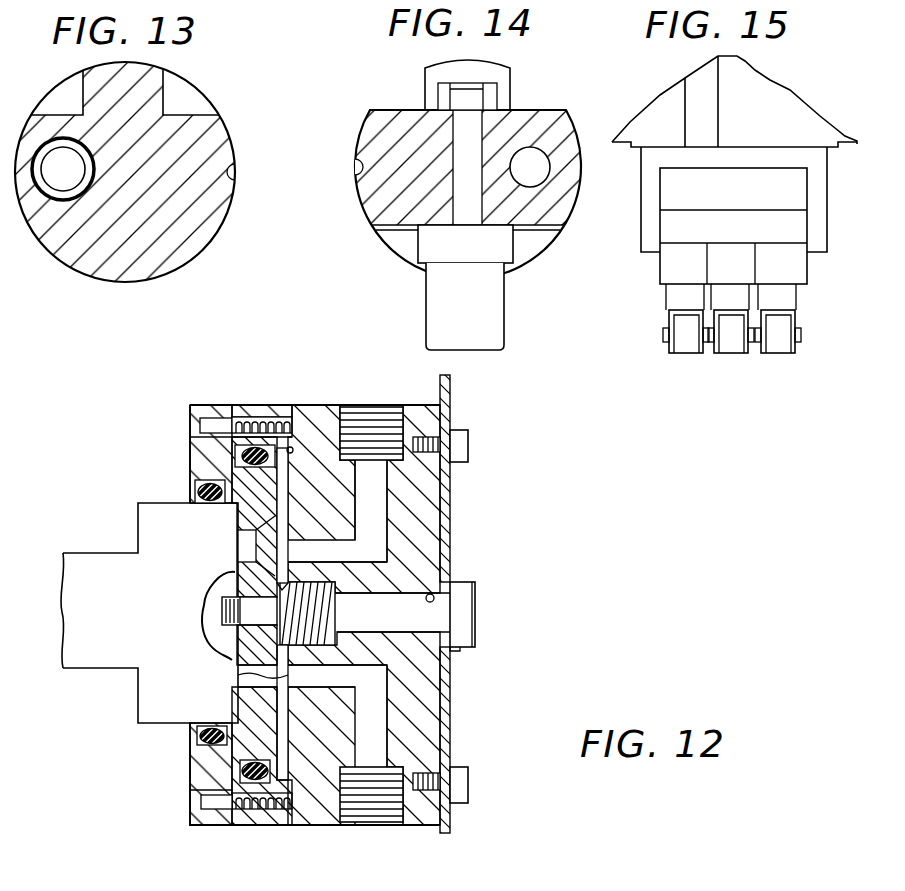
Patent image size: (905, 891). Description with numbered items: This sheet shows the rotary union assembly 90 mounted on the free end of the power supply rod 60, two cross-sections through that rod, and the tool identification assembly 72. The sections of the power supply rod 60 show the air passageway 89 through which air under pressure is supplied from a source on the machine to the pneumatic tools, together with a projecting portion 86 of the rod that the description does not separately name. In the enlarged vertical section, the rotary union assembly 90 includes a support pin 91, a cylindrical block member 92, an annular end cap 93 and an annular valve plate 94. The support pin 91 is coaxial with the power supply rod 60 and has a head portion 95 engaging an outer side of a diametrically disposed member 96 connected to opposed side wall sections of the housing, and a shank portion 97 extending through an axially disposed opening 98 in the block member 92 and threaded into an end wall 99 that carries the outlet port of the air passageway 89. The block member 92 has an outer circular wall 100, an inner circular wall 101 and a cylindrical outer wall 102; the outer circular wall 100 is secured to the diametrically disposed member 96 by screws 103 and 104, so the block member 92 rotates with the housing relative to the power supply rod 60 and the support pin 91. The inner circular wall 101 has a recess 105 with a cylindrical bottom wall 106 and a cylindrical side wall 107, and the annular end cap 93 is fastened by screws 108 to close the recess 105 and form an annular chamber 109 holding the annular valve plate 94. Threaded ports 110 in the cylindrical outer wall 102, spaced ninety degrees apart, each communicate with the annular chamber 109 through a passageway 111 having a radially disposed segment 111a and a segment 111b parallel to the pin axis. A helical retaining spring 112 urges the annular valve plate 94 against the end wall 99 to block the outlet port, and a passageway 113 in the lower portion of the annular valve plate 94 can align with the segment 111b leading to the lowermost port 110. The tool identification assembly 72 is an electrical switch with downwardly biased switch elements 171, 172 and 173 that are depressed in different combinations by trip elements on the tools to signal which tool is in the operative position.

In FIG. 13, the power supply rod 60 is at (225, 116).
In FIG. 14, the power supply rod 60 is at (515, 86).
In FIG. 15, the power supply rod 60 is at (800, 84).
In FIG. 12, the power supply rod 60 is at (125, 652).
In FIG. 13, the air passageway 89 is at (55, 182).
In FIG. 14, the air passageway 89 is at (548, 168).
In FIG. 14, the stem 86 is at (428, 312).
In FIG. 15, the tool identification assembly 72 is at (645, 278).
In FIG. 15, the switch element 171 is at (689, 352).
In FIG. 15, the switch element 172 is at (734, 354).
In FIG. 15, the switch element 173 is at (778, 353).
In FIG. 12, the rotary union assembly 90 is at (186, 407).
In FIG. 12, the support pin 91 is at (481, 612).
In FIG. 12, the cylindrical block member 92 is at (428, 541).
In FIG. 12, the annular end cap 93 is at (186, 770).
In FIG. 12, the annular valve plate 94 is at (224, 472).
In FIG. 12, the head portion 95 is at (476, 583).
In FIG. 12, the diametrically disposed member 96 is at (450, 701).
In FIG. 12, the shank portion 97 is at (451, 664).
In FIG. 12, the axially disposed opening 98 is at (434, 595).
In FIG. 12, the end wall 99 is at (240, 655).
In FIG. 12, the outer circular wall 100 is at (382, 738).
In FIG. 12, the inner circular wall 101 is at (190, 447).
In FIG. 12, the cylindrical outer wall 102 is at (302, 405).
In FIG. 12, the screw 103 is at (469, 444).
In FIG. 12, the screw 104 is at (469, 795).
In FIG. 12, the recess 105 is at (280, 508).
In FIG. 12, the cylindrical bottom wall 106 is at (288, 533).
In FIG. 12, the cylindrical side wall 107 is at (292, 452).
In FIG. 12, the screws 108 is at (248, 417).
In FIG. 12, the annular chamber 109 is at (240, 675).
In FIG. 12, the threaded ports 110 is at (396, 417).
In FIG. 12, the passageway 111 is at (382, 480).
In FIG. 12, the radially disposed segment 111a is at (382, 505).
In FIG. 12, the axial segment 111b is at (368, 564).
In FIG. 12, the helical retaining spring 112 is at (334, 604).
In FIG. 12, the passageway 113 is at (242, 676).